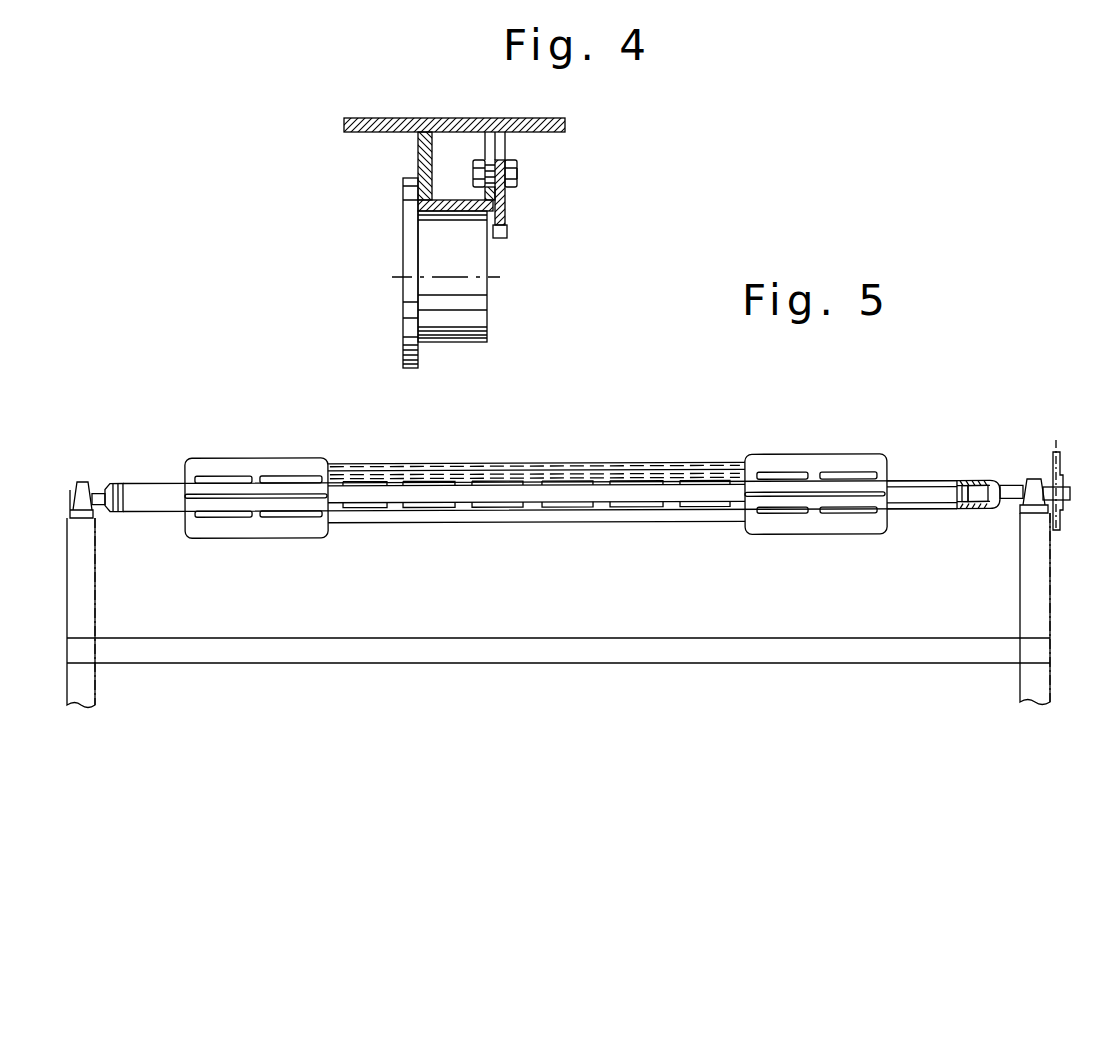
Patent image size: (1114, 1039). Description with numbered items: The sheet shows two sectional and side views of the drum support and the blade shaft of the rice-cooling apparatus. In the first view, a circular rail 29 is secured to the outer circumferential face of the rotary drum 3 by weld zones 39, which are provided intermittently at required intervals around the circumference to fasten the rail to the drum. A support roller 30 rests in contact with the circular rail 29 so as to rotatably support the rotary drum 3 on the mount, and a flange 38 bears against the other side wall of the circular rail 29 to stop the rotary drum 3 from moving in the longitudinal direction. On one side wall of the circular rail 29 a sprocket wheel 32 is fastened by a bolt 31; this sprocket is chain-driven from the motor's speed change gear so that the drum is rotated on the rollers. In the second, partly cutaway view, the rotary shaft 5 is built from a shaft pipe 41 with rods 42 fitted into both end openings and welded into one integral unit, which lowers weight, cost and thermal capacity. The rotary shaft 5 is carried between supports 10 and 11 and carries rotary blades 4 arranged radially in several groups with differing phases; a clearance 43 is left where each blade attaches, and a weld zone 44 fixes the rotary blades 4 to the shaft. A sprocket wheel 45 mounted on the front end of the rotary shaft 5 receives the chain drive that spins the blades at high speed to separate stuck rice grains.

In FIG. 4, the rotary drum 3 is at (558, 133).
In FIG. 4, the weld zones 39 is at (426, 153).
In FIG. 4, the circular rail 29 is at (468, 212).
In FIG. 4, the bolt 31 is at (520, 178).
In FIG. 4, the sprocket wheel 32 is at (506, 234).
In FIG. 4, the flange 38 is at (410, 322).
In FIG. 4, the support rollers 30 is at (465, 342).
In FIG. 5, the left support post 10 is at (75, 480).
In FIG. 5, the right support post 11 is at (1031, 478).
In FIG. 5, the rotary shaft 5 is at (947, 478).
In FIG. 5, the rods 42 is at (120, 479).
In FIG. 5, the rotary blades 4 is at (300, 457).
In FIG. 5, the clearance 43 is at (222, 475).
In FIG. 5, the weld zone 44 is at (255, 516).
In FIG. 5, the shaft pipe 41 is at (916, 510).
In FIG. 5, the sprocket wheel 45 is at (1058, 452).